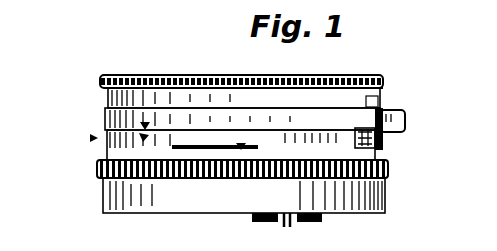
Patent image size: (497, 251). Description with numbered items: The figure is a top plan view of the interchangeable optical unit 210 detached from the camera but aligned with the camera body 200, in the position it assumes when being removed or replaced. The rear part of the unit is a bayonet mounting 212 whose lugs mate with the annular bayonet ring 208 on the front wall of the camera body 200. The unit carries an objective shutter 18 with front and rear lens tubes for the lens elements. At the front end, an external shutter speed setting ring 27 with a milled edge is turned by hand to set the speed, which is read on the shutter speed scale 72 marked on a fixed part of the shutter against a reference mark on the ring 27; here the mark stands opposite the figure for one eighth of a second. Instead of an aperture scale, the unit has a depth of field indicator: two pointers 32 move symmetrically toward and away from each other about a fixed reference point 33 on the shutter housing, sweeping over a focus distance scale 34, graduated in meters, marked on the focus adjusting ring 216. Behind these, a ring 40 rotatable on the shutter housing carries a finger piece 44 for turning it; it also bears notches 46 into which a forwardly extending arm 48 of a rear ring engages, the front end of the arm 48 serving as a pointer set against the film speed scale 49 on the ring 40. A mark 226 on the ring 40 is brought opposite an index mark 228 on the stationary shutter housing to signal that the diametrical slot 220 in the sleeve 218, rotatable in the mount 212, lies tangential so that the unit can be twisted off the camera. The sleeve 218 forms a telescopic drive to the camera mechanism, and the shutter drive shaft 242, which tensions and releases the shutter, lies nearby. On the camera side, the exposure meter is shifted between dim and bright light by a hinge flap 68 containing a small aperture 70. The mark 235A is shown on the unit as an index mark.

The objective shutter 18 is at (108, 95).
The external shutter speed setting ring 27 is at (118, 74).
The depth of field pointers 32 is at (253, 146).
The fixed reference point 33 is at (245, 153).
The focus distance scale 34 is at (233, 150).
The ring 40 is at (108, 116).
The external arm or finger piece 44 is at (406, 121).
The notches or depressions 46 is at (384, 136).
The forwardly extending arm 48 is at (383, 146).
The film speed scale 49 is at (383, 104).
The hinge flap 68 is at (78, 250).
The small aperture 70 is at (53, 250).
The shutter speed scale 72 is at (381, 90).
The camera body 200 is at (207, 246).
The annular bayonet ring 208 is at (129, 246).
The interchangeable optical unit 210 is at (91, 138).
The bayonet mounting 212 is at (133, 214).
The focus adjusting ring 216 is at (388, 172).
The sleeve 218 is at (315, 222).
The diametrical slot 220 is at (295, 223).
The mark 226 is at (146, 124).
The index mark 228 is at (143, 138).
The index mark 235A is at (283, 218).
The drive shaft of the shutter 242 is at (263, 223).